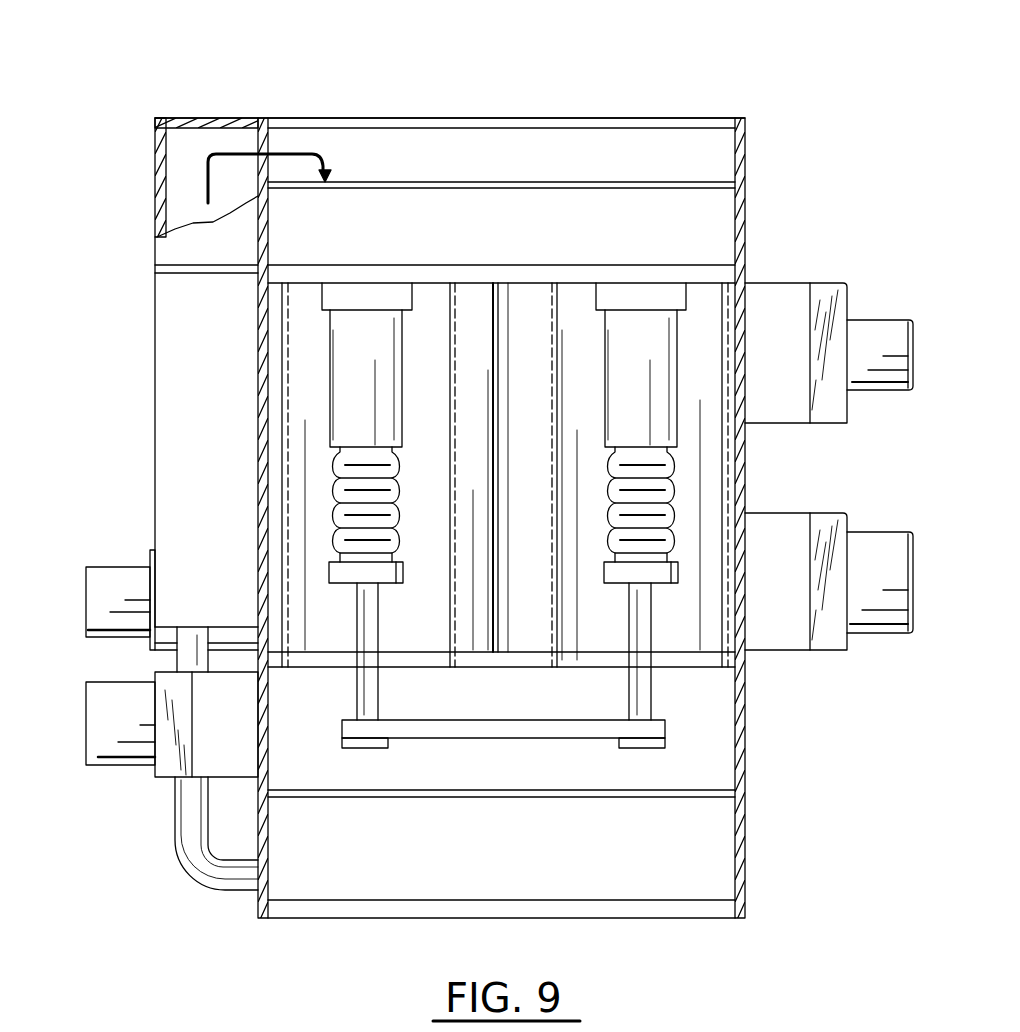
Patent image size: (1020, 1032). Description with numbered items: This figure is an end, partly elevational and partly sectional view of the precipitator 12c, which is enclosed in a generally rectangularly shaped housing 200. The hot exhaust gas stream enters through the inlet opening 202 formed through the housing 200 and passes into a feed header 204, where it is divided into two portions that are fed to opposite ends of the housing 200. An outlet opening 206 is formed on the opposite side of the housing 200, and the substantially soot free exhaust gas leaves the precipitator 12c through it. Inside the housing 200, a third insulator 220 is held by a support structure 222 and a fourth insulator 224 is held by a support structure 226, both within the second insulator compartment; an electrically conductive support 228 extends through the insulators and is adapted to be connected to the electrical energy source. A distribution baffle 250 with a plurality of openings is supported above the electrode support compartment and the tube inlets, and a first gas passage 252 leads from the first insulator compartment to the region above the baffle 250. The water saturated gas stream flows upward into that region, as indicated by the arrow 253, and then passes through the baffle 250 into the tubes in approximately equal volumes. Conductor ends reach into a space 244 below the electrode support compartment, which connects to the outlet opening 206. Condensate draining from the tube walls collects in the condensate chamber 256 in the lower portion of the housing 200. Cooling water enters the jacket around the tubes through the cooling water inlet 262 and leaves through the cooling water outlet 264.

The precipitator 12c is at (472, 104).
The housing 200 is at (607, 112).
The distribution baffle 250 is at (664, 182).
The first gas passage 252 is at (188, 164).
The arrow 253 is at (283, 153).
The third insulator 220 is at (343, 402).
The support structure 222 is at (283, 490).
The fourth insulator 224 is at (660, 392).
The support structure 226 is at (728, 588).
The electrically conductive support 228 is at (545, 747).
The space 244 is at (326, 782).
The condensate chamber 256 is at (688, 862).
The cooling water inlet 262 is at (857, 400).
The feed header 204 is at (779, 635).
The inlet opening 202 is at (859, 645).
The cooling water outlet 264 is at (128, 552).
The outlet opening 206 is at (113, 782).